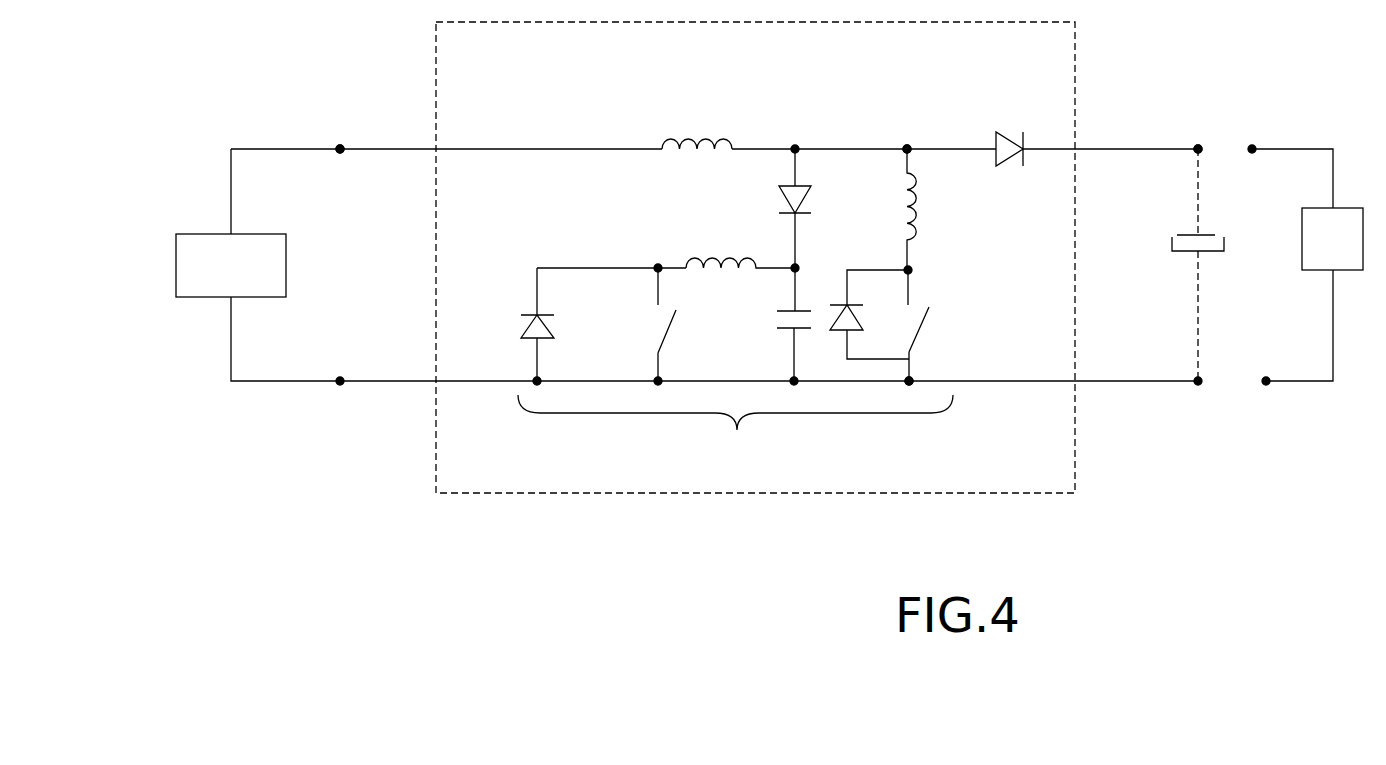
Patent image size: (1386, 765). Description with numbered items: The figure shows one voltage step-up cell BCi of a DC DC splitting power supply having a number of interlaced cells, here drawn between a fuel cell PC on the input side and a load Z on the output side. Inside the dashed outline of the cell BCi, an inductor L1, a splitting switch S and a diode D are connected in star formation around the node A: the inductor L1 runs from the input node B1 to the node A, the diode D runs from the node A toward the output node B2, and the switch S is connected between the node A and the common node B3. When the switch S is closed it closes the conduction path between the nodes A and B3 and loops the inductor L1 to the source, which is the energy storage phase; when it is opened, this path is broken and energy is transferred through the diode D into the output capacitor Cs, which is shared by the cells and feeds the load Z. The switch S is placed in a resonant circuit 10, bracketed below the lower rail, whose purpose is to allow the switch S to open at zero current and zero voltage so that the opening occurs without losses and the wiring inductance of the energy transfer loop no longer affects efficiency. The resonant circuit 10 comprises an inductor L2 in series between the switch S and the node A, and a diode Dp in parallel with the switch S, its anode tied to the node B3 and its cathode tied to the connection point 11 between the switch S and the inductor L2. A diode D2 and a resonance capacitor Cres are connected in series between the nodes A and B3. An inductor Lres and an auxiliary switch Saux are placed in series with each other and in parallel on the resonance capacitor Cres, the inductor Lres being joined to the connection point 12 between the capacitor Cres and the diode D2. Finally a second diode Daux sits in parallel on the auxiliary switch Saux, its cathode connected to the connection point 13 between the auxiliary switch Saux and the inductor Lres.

The resonant circuit 10 is at (735, 429).
The connection point 11 is at (911, 270).
The connection point 12 is at (799, 267).
The connection point 13 is at (656, 266).
The node B1 is at (340, 146).
The node B2 is at (1196, 146).
The node B3 is at (913, 380).
The node A is at (905, 146).
The inductor L1 is at (697, 124).
The inductor L2 is at (931, 209).
The diode D is at (1005, 130).
The diode D2 is at (776, 197).
The inductor Lres is at (716, 258).
The resonance capacitor Cres is at (757, 324).
The second diode Daux is at (520, 328).
The auxiliary switch Saux is at (628, 324).
The diode Dp is at (847, 328).
The splitting switch S is at (933, 325).
The output capacitor Cs is at (1169, 265).
The load Z is at (1305, 265).
The fuel cell PC is at (231, 265).
The cell BCi is at (436, 494).